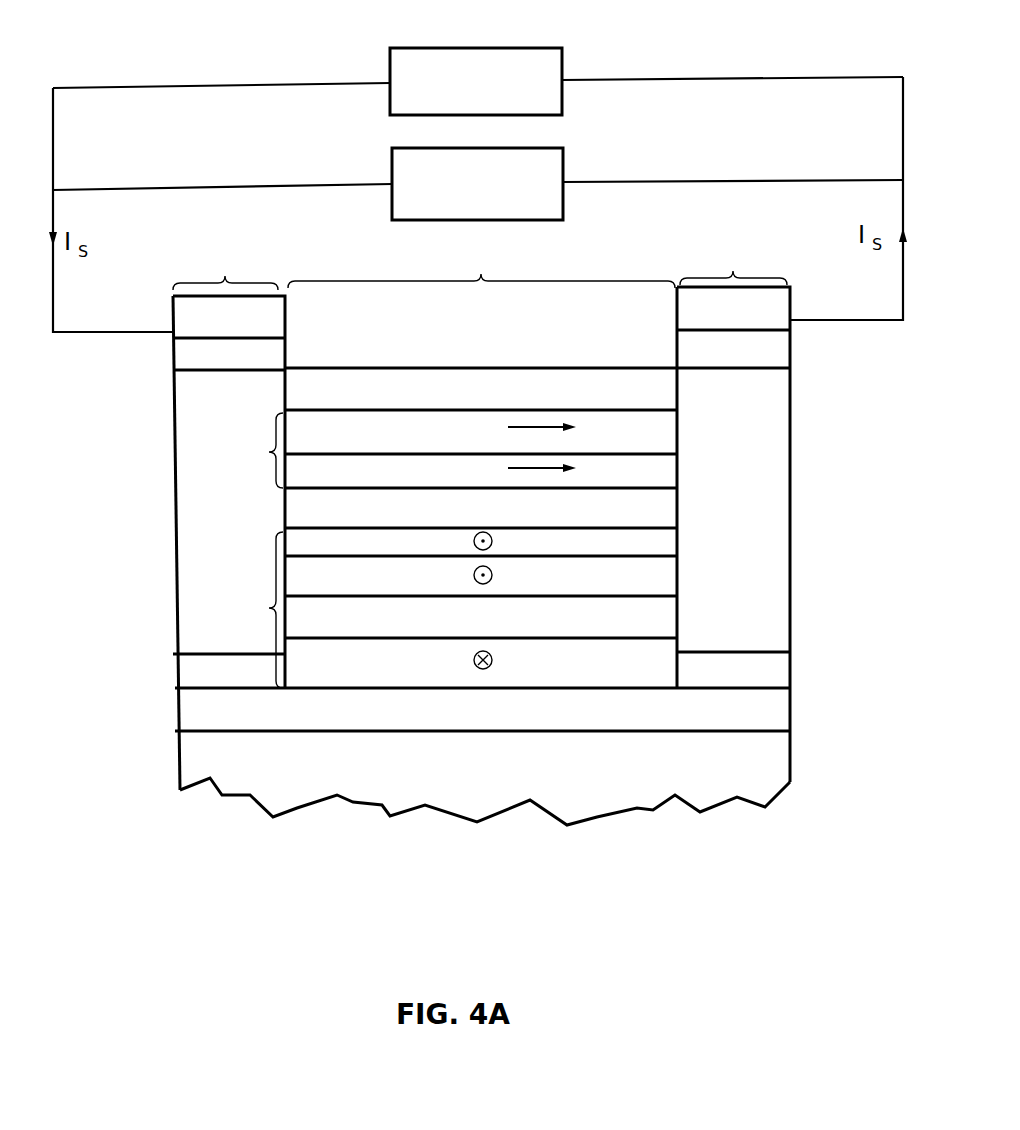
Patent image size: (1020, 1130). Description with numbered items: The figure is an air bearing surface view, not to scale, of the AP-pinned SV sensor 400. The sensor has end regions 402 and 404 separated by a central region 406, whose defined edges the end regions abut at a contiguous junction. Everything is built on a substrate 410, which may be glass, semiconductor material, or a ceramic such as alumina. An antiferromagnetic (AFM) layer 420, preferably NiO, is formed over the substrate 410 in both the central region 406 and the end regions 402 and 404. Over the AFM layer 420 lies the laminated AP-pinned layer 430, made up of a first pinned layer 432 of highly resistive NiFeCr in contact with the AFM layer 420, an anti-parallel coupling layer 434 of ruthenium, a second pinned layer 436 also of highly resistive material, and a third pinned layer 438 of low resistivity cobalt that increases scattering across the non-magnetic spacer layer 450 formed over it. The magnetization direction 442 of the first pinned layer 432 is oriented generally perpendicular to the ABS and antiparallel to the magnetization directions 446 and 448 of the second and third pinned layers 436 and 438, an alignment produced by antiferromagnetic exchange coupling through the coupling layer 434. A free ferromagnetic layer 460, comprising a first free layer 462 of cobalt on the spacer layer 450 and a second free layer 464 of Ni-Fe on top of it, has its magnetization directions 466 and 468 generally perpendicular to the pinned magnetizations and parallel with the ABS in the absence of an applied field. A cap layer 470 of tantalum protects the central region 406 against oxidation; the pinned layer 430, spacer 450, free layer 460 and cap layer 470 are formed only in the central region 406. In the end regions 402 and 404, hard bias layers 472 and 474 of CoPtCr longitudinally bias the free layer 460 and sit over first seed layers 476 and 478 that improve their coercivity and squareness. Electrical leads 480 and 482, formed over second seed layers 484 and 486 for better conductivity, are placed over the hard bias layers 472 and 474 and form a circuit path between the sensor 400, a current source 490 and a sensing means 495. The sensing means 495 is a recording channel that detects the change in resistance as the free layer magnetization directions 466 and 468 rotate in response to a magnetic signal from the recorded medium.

The AP-pinned SV sensor 400 is at (275, 912).
The end region 402 is at (225, 267).
The end region 404 is at (733, 262).
The central region 406 is at (481, 263).
The substrate 410 is at (757, 750).
The antiferromagnetic (AFM) layer 420 is at (760, 702).
The laminated AP-pinned layer 430 is at (267, 608).
The first pinned layer 432 is at (653, 655).
The anti-parallel coupling layer 434 is at (655, 617).
The second pinned layer 436 is at (650, 575).
The third pinned layer 438 is at (645, 538).
The magnetization direction 442 is at (472, 660).
The magnetization direction 446 is at (472, 575).
The magnetization direction 448 is at (472, 541).
The non-magnetic spacer layer 450 is at (300, 512).
The free ferromagnetic layer 460 is at (267, 452).
The first free layer 462 is at (650, 465).
The second free layer 464 is at (642, 435).
The magnetization direction 466 is at (548, 466).
The magnetization direction 468 is at (537, 424).
The cap layer 470 is at (370, 387).
The hard bias layer 472 is at (200, 400).
The hard bias layer 474 is at (760, 385).
The seed1 layer 476 is at (190, 678).
The seed1 layer 478 is at (783, 670).
The electrical lead 480 is at (187, 315).
The electrical lead 482 is at (776, 308).
The seed 2 layer 484 is at (185, 352).
The seed 2 layer 486 is at (775, 348).
The current source 490 is at (552, 148).
The sensing means 495 is at (550, 48).